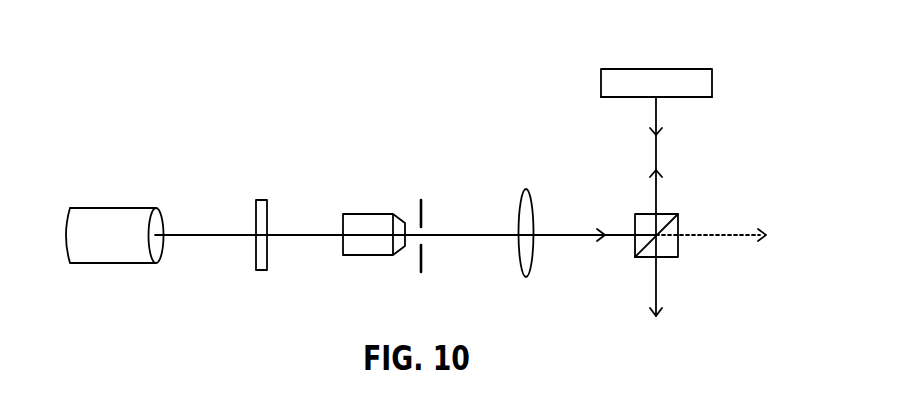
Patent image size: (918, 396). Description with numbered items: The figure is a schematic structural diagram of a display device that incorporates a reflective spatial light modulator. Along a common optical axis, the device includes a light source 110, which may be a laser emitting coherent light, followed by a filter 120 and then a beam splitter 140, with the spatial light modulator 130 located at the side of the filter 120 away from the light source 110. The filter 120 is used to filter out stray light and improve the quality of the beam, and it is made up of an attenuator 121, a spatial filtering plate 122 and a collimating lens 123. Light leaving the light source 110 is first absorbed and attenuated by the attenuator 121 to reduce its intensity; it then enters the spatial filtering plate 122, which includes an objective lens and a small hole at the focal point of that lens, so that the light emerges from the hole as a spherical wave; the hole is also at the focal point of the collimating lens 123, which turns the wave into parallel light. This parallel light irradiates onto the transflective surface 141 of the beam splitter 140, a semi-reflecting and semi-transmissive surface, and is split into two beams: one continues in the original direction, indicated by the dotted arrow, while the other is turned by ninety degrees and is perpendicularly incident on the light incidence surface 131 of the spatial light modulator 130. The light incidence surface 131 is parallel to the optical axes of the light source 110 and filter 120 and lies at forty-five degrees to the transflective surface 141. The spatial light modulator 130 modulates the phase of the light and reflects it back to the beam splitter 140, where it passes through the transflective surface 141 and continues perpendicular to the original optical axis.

The light source 110 is at (110, 228).
The filter 120 is at (547, 132).
The attenuator 121 is at (262, 200).
The spatial filtering plate 122 is at (435, 192).
The collimating lens 123 is at (522, 190).
The spatial light modulator 130 is at (658, 76).
The light incidence surface 131 is at (702, 97).
The beam splitter 140 is at (675, 257).
The transflective surface 141 is at (640, 244).